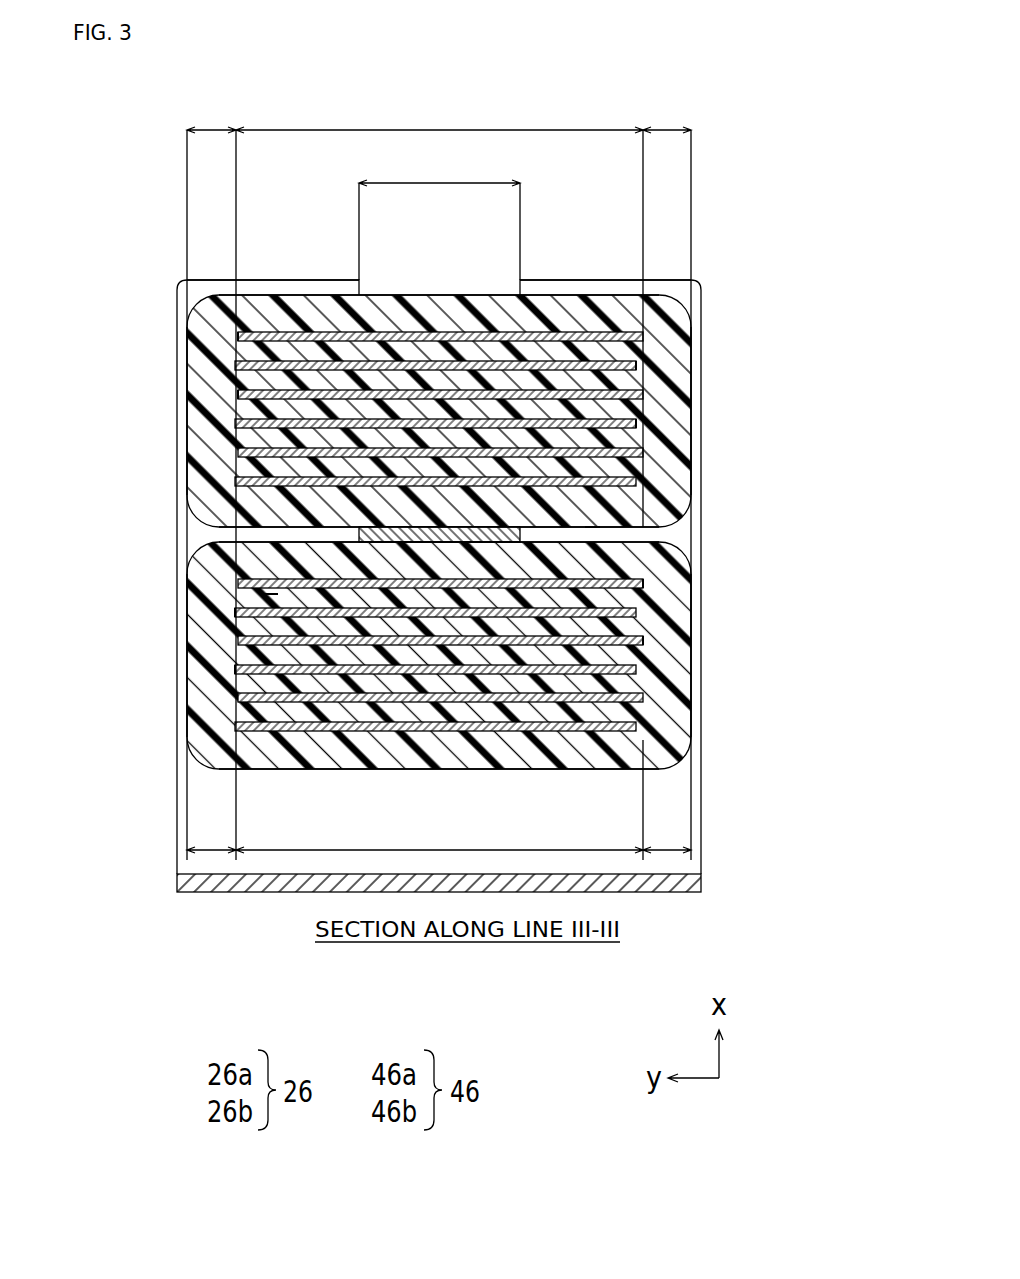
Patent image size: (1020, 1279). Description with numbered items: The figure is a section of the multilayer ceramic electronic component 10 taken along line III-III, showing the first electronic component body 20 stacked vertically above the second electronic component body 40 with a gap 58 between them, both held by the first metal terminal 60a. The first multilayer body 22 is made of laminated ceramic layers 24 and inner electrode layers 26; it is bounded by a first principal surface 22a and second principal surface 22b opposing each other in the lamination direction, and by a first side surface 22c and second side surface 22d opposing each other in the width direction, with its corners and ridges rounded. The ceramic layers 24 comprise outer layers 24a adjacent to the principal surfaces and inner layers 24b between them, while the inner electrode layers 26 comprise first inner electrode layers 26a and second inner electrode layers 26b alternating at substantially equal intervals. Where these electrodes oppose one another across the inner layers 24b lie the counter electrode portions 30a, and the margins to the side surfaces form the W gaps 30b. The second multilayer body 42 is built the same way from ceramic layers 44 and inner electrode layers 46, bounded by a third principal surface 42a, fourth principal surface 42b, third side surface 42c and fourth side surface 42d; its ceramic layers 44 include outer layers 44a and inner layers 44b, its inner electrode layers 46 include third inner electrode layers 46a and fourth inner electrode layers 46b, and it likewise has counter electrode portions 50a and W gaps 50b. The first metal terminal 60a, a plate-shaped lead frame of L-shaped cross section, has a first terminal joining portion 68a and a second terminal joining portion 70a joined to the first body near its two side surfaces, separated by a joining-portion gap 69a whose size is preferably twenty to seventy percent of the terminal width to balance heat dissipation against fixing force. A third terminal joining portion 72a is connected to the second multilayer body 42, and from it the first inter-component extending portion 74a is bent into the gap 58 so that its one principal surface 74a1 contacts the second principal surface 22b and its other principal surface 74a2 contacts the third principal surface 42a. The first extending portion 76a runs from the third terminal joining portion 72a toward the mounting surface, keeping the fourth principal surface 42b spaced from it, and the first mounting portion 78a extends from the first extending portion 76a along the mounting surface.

The multilayer ceramic electronic component 10 is at (121, 264).
The first electronic component body 20 is at (435, 374).
The first multilayer body 22 is at (443, 374).
The first principal surface 22a is at (467, 295).
The second principal surface 22b is at (265, 527).
The first side surface 22c is at (187, 390).
The second side surface 22d is at (692, 408).
The ceramic layers 24 is at (435, 395).
The outer layers 24a is at (625, 332).
The inner layers 24b is at (622, 366).
The inner electrode layers 26 is at (437, 322).
The first inner electrode layers 26a is at (313, 397).
The second inner electrode layers 26b is at (560, 427).
The counter electrode portions 30a is at (439, 476).
The side portions (W gaps) 30b is at (205, 128).
The second electronic component body 40 is at (436, 687).
The second multilayer body 42 is at (435, 687).
The third principal surface 42a is at (325, 539).
The fourth principal surface 42b is at (330, 770).
The third side surface 42c is at (187, 672).
The fourth side surface 42d is at (692, 695).
The ceramic layers 44 is at (436, 673).
The outer layers 44a is at (620, 598).
The inner layers 44b is at (640, 595).
The inner electrode layers 46 is at (439, 698).
The third inner electrode layers 46a is at (560, 700).
The fourth inner electrode layers 46b is at (403, 730).
The counter electrode portions 50a is at (439, 832).
The side portions (W gaps) 50b is at (212, 848).
The gap 58 is at (593, 516).
The first metal terminal 60a is at (480, 510).
The first terminal joining portion 68a is at (256, 283).
The joining-portion gap 69a is at (439, 213).
The second terminal joining portion 70a is at (600, 282).
The third terminal joining portion 72a is at (692, 718).
The first inter-component extending portion 74a is at (570, 406).
The one principal surface 74a1 is at (477, 522).
The other principal surface 74a2 is at (485, 575).
The first extending portion 76a is at (283, 793).
The first mounting portion 78a is at (258, 894).